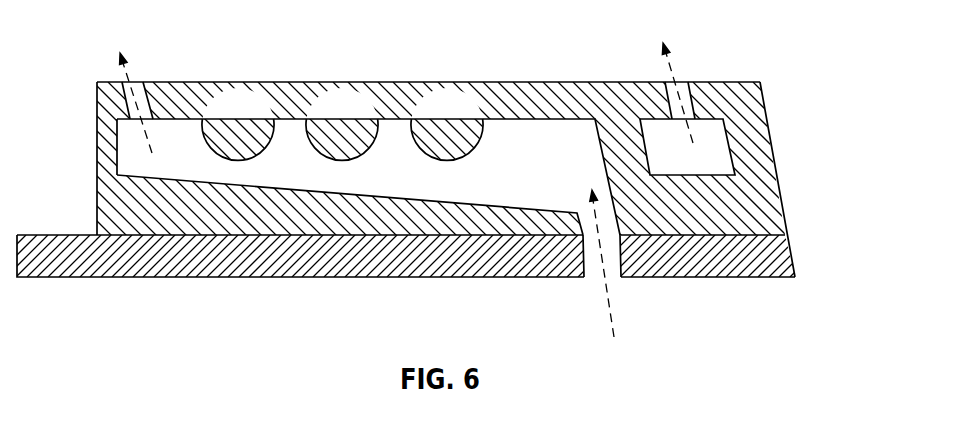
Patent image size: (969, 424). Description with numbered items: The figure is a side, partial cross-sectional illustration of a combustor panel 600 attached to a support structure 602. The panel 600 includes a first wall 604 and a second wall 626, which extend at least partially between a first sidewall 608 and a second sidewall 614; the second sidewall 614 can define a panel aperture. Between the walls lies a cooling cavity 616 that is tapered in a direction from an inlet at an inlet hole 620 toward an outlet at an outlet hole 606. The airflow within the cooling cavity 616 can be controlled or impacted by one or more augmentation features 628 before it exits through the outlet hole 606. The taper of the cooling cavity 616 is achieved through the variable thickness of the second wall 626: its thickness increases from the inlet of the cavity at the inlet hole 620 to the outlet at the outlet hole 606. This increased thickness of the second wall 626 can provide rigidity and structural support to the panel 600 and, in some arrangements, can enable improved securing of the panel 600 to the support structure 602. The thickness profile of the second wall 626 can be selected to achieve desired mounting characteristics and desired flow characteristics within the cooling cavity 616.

The panel 600 is at (791, 39).
The support structure 602 is at (758, 260).
The first wall 604 is at (565, 100).
The outlet hole 606 is at (140, 62).
The first sidewall 608 is at (97, 165).
The second sidewall 614 is at (770, 215).
The cooling cavity 616 is at (418, 177).
The inlet hole 620 is at (620, 296).
The second wall 626 is at (229, 218).
The augmentation features 628 is at (452, 140).